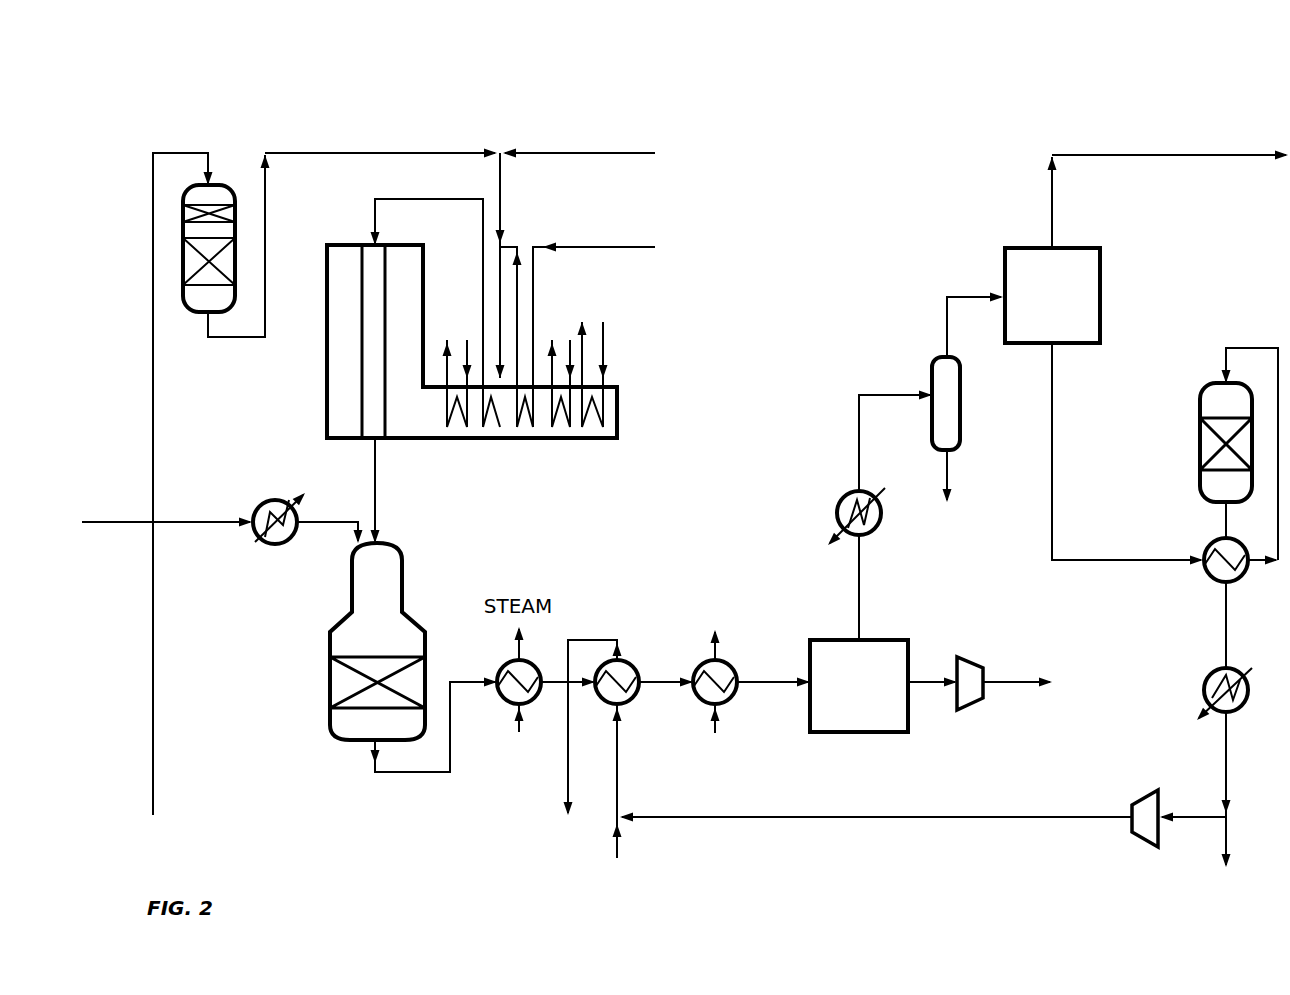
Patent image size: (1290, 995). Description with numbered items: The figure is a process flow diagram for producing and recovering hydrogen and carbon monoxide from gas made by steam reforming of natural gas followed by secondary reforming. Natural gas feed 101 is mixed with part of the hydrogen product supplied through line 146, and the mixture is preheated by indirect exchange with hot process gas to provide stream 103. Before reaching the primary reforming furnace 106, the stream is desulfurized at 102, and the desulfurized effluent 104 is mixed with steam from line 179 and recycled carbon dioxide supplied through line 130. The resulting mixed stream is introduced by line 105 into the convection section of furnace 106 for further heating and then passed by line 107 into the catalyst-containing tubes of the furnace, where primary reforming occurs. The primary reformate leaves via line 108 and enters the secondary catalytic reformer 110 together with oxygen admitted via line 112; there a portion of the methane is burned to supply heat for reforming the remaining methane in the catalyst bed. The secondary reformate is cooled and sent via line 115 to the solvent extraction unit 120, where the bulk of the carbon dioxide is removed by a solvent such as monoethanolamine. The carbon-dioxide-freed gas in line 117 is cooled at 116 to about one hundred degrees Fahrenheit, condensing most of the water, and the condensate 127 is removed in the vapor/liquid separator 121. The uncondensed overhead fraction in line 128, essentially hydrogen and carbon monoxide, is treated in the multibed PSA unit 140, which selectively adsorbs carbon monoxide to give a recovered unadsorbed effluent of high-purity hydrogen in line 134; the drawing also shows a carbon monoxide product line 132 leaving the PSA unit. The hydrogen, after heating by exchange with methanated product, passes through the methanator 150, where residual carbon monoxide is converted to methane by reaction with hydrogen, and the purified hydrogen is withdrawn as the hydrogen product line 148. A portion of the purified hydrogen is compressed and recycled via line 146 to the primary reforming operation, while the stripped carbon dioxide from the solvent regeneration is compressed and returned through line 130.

The natural gas feed 101 is at (620, 847).
The desulfurizer 102 is at (228, 183).
The preheated feed stream 103 is at (613, 637).
The desulfurized effluent 104 is at (396, 155).
The mixed feed line 105 is at (505, 216).
The primary reforming furnace 106 is at (327, 414).
The catalyst tube feed line 107 is at (461, 197).
The primary reformate line 108 is at (376, 462).
The secondary catalytic reformer 110 is at (402, 580).
The oxygen line 112 is at (184, 521).
The cooled secondary reformate line 115 is at (752, 665).
The cooler 116 is at (882, 520).
The CO2-freed gas line 117 is at (864, 596).
The solvent extraction unit 120 is at (842, 704).
The vapor/liquid separator 121 is at (961, 393).
The condensate 127 is at (950, 476).
The uncondensed overhead fraction line 128 is at (954, 299).
The CO2 recycle line 130 is at (1036, 681).
The CO product line 132 is at (1140, 158).
The hydrogen effluent line 134 is at (1107, 559).
The PSA unit 140 is at (1036, 327).
The hydrogen recycle line 146 is at (876, 833).
The hydrogen product line 148 is at (1224, 838).
The methanator 150 is at (1197, 450).
The steam line 179 is at (598, 157).